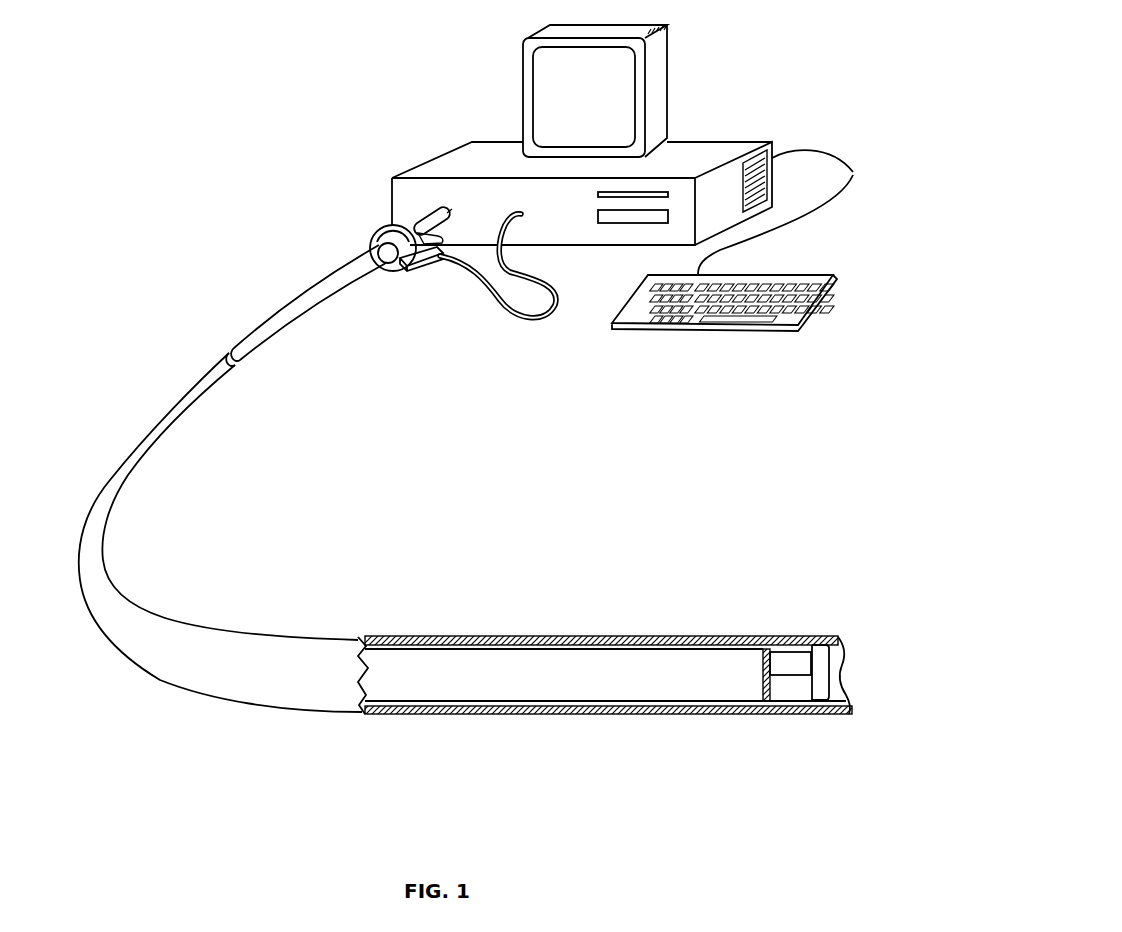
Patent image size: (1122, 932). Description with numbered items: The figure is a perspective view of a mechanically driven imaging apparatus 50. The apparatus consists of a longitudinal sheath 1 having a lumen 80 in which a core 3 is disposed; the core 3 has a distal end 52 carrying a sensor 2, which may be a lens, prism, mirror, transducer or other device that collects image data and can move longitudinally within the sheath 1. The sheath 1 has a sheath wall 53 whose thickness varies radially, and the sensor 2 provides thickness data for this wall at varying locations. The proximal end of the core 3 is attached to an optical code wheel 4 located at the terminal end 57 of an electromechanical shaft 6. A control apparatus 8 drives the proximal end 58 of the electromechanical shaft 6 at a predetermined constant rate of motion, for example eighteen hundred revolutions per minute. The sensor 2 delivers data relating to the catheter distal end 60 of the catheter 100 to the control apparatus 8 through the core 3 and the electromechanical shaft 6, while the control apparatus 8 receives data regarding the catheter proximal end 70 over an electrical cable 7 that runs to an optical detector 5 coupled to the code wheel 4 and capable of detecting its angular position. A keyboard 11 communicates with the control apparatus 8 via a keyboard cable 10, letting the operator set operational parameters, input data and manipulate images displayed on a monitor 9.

The longitudinal sheath 1 is at (233, 661).
The sensor 2 is at (798, 682).
The core 3 is at (562, 684).
The code wheel 4 is at (393, 271).
The optical detector 5 is at (412, 268).
The electromechanical shaft 6 is at (430, 222).
The electrical cable 7 is at (553, 307).
The control apparatus 8 is at (445, 165).
The monitor 9 is at (662, 93).
The keyboard cable 10 is at (853, 172).
The keyboard 11 is at (782, 317).
The mechanically driven imaging apparatus 50 is at (838, 88).
The distal end 52 is at (612, 662).
The sheath wall 53 is at (613, 717).
The terminal end 57 is at (440, 240).
The proximal end 58 is at (447, 222).
The catheter distal end 60 is at (694, 617).
The catheter proximal end 70 is at (385, 252).
The lumen 80 is at (795, 648).
The catheter 100 is at (341, 445).